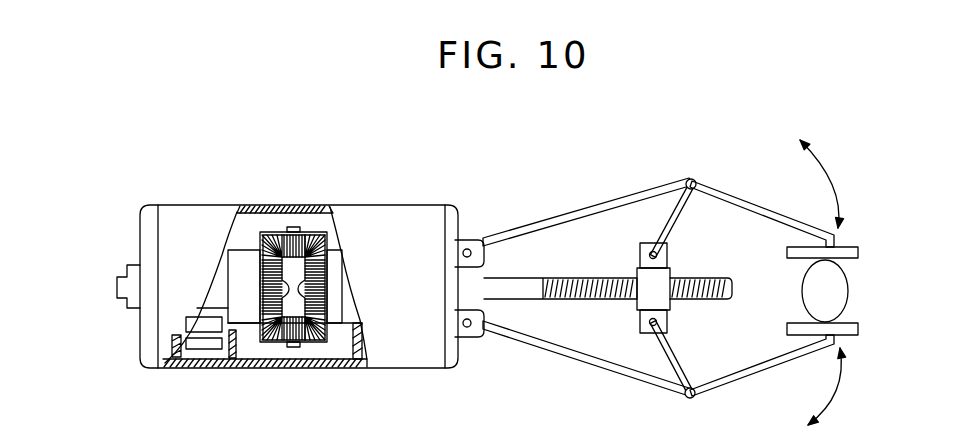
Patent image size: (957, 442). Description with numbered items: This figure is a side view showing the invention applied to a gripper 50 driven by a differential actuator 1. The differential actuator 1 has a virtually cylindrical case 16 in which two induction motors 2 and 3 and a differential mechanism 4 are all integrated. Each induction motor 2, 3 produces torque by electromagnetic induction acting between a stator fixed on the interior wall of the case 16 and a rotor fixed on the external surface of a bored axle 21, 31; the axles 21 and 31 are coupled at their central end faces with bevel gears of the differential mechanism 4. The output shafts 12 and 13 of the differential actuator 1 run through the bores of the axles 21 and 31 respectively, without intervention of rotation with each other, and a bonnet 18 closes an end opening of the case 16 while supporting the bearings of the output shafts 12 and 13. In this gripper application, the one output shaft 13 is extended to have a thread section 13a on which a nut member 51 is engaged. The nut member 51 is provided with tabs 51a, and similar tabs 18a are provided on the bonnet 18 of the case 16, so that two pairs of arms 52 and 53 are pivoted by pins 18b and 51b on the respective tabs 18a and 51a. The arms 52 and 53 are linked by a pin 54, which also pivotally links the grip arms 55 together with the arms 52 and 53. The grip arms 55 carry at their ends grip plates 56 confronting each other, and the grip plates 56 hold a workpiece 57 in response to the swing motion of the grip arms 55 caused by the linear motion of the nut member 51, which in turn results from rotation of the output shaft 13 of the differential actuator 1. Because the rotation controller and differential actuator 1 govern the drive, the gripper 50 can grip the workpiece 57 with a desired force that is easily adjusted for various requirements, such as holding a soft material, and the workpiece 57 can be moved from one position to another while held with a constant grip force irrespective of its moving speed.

The differential actuator 1 is at (386, 215).
The induction motor 2 is at (200, 345).
The induction motor 3 is at (356, 350).
The differential mechanism 4 is at (279, 222).
The output shaft 12 is at (118, 286).
The output shaft 13 is at (530, 287).
The thread section 13a is at (705, 283).
The case 16 is at (172, 215).
The bonnet 18 is at (148, 228).
The tab 18a is at (468, 240).
The pin 18b is at (486, 260).
The axle 21 is at (244, 322).
The axle 31 is at (340, 318).
The gripper 50 is at (736, 158).
The nut member 51 is at (634, 303).
The tab 51a is at (668, 255).
The pin 51b is at (641, 254).
The arm 52 is at (600, 205).
The arm 53 is at (671, 219).
The pin 54 is at (691, 178).
The grip arm 55 is at (752, 208).
The grip plate 56 is at (860, 251).
The workpiece 57 is at (840, 293).